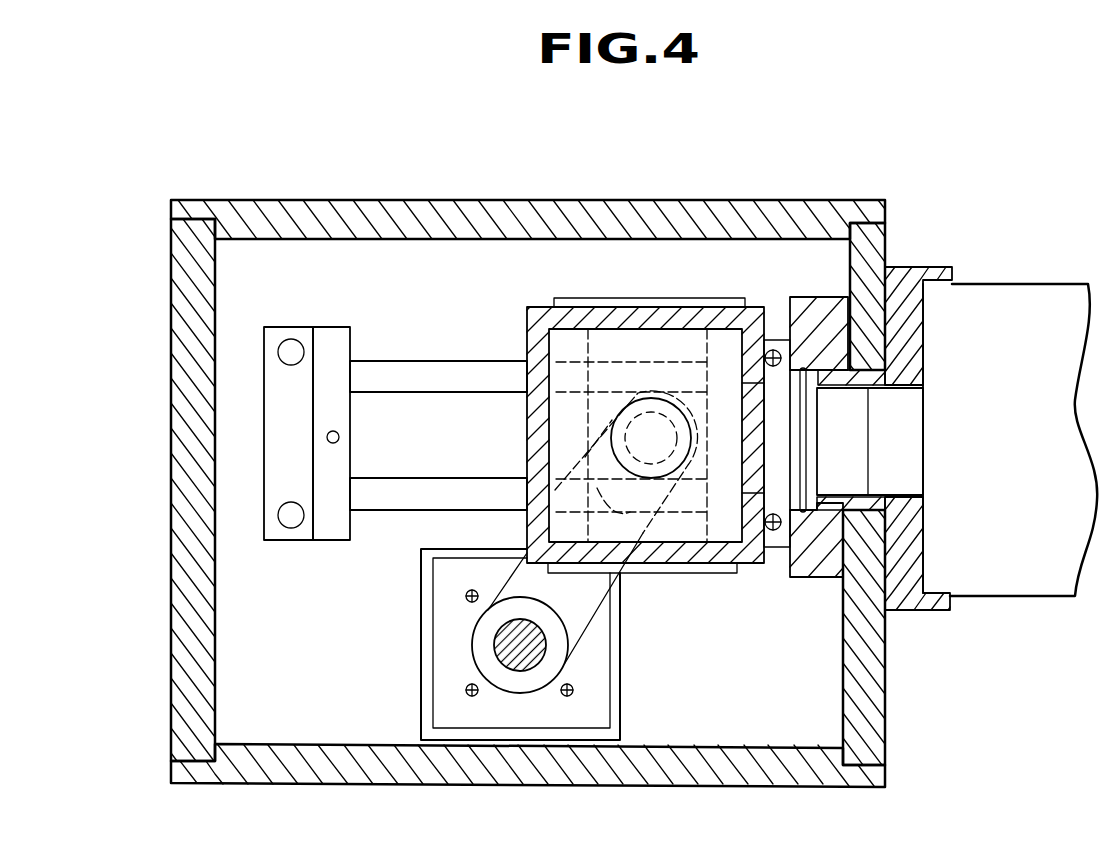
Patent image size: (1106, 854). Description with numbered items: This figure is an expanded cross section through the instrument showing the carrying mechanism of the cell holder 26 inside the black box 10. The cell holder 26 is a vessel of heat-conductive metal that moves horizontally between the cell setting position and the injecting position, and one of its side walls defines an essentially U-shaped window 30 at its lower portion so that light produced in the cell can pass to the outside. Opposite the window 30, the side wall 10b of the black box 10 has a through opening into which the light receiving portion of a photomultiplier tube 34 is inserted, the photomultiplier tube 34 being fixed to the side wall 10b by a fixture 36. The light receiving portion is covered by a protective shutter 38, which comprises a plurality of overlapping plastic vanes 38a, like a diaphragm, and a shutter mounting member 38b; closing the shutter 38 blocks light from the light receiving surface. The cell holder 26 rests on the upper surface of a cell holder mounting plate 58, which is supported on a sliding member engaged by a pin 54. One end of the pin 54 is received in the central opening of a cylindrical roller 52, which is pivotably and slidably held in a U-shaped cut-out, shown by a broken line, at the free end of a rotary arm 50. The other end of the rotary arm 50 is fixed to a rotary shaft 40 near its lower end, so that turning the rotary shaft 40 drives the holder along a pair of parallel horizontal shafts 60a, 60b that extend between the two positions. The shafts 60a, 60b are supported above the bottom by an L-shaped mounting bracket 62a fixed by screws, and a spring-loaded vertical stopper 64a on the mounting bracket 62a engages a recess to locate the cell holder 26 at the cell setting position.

The black box 10 is at (560, 446).
The side wall 10b is at (878, 255).
The cell holder 26 is at (598, 436).
The window 30 is at (764, 448).
The photomultiplier tube 34 is at (1038, 303).
The fixture 36 is at (923, 335).
The protective shutter 38 is at (863, 359).
The vanes 38a is at (807, 433).
The shutter mounting member 38b is at (828, 315).
The rotary shaft 40 is at (537, 655).
The rotary arm 50 is at (583, 600).
The roller 52 is at (662, 433).
The pin 54 is at (648, 398).
The cell holder mounting plate 58 is at (665, 574).
The shaft 60a is at (393, 500).
The shaft 60b is at (413, 372).
The mounting bracket 62a is at (333, 541).
The stopper 64a is at (340, 437).